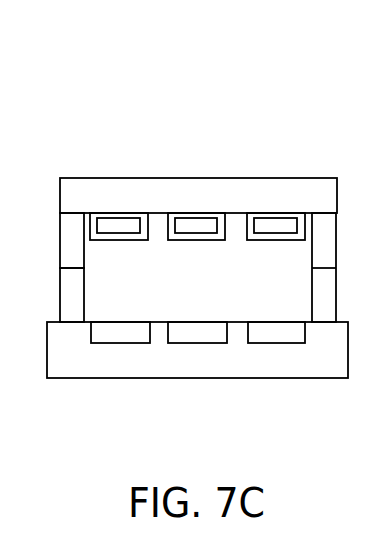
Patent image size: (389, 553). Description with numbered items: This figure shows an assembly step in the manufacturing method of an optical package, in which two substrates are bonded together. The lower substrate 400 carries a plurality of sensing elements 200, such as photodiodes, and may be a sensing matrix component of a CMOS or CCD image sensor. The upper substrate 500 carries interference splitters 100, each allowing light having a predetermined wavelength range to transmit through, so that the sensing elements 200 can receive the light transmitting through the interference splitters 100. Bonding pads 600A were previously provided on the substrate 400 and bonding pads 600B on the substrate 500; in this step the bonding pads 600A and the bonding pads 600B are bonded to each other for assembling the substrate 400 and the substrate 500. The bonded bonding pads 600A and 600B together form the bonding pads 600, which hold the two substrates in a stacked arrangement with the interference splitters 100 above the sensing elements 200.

The interference splitter 100 is at (121, 212).
The sensing element 200 is at (118, 345).
The substrate 400 is at (326, 370).
The substrate 500 is at (320, 178).
The bonding pads 600 is at (133, 52).
The bonding pads 600A is at (60, 297).
The bonding pads 600B is at (60, 240).